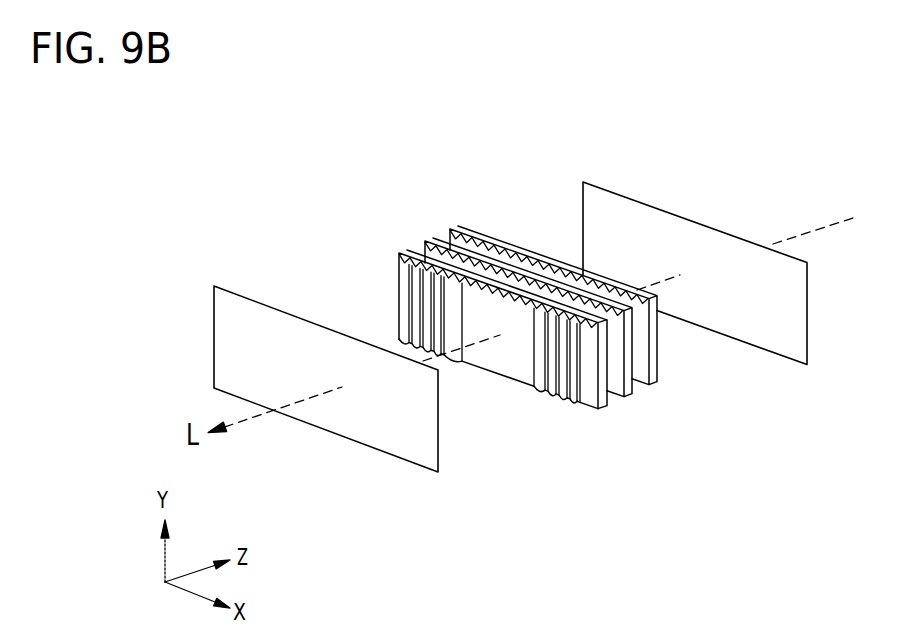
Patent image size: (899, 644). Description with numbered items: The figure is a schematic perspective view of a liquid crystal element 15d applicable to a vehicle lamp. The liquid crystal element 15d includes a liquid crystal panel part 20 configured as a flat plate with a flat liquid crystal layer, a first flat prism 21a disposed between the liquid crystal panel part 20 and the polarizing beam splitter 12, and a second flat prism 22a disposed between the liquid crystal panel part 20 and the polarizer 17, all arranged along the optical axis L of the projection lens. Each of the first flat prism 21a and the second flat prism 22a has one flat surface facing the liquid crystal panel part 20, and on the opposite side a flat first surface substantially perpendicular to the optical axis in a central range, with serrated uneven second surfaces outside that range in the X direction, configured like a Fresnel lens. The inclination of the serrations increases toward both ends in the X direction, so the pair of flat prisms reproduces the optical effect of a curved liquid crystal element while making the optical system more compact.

The polarizing beam splitter 12 is at (647, 205).
The polarizer 17 is at (258, 301).
The liquid crystal element 15d is at (540, 146).
The liquid crystal panel part 20 is at (447, 244).
The first flat prism 21a is at (530, 254).
The second flat prism 22a is at (407, 252).